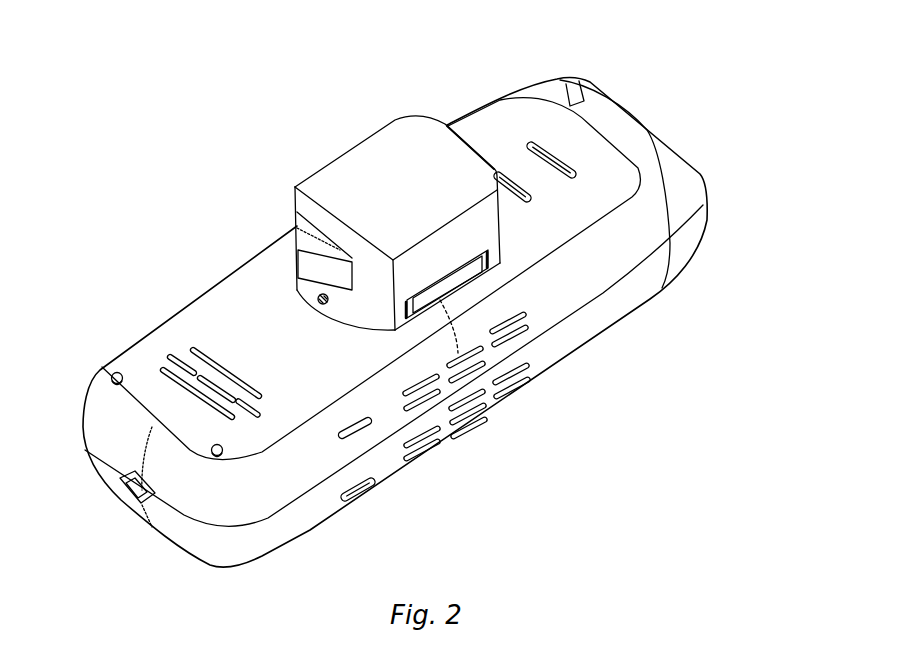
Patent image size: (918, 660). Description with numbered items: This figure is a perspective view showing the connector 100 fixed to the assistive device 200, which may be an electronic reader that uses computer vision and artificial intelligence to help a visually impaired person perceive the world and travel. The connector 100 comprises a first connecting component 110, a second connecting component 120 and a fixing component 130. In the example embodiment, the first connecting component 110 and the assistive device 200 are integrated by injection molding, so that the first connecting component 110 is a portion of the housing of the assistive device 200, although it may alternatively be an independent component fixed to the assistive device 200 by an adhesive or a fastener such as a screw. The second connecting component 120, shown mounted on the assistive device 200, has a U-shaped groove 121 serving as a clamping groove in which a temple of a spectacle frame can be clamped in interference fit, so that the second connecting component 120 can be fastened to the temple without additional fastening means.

The connector 100 is at (441, 287).
The first connecting component 110 is at (450, 300).
The second connecting component 120 is at (313, 212).
The U-shaped groove 121 is at (320, 256).
The fixing component 130 is at (323, 299).
The assistive device 200 is at (627, 303).